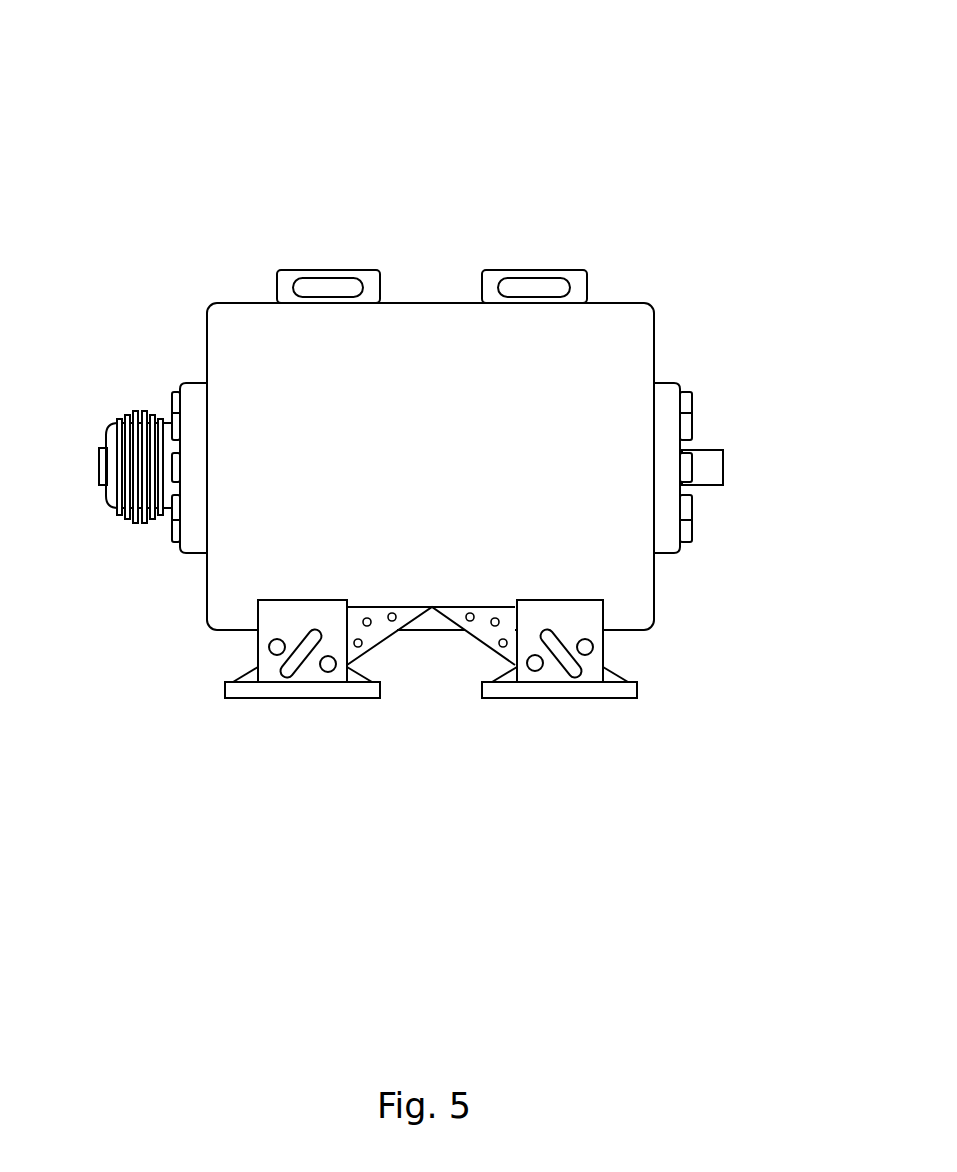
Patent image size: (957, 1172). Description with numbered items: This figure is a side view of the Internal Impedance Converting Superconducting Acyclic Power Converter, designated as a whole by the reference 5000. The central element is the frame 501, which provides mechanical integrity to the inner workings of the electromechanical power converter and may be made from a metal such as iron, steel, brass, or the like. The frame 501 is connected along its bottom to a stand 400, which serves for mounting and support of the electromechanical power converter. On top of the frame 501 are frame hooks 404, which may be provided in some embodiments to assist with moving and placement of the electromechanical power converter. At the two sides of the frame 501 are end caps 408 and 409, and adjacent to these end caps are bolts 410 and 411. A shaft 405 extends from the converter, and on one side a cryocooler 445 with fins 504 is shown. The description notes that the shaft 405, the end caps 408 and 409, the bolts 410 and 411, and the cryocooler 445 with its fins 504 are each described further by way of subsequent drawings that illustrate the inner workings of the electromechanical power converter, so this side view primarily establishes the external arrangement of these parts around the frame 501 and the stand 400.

The motor assembly 5000 is at (404, 423).
The frame 501 is at (602, 337).
The frame hooks 404 is at (483, 268).
The bolt 411 is at (173, 393).
The bolt 410 is at (692, 392).
The end cap 409 is at (188, 553).
The end cap 408 is at (673, 552).
The shaft 405 is at (404, 487).
The cryocooler 445 is at (107, 503).
The fins 504 is at (133, 523).
The stand 400 is at (492, 700).